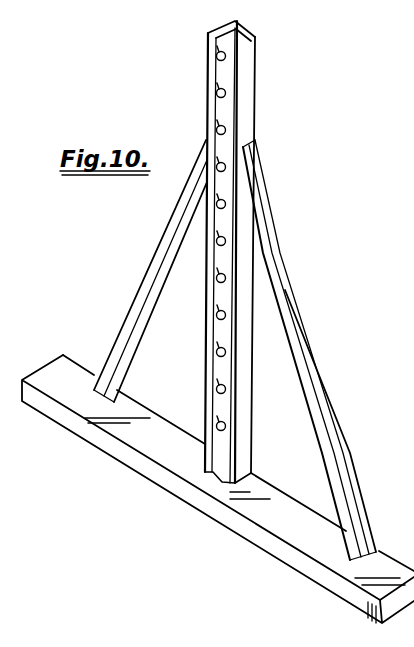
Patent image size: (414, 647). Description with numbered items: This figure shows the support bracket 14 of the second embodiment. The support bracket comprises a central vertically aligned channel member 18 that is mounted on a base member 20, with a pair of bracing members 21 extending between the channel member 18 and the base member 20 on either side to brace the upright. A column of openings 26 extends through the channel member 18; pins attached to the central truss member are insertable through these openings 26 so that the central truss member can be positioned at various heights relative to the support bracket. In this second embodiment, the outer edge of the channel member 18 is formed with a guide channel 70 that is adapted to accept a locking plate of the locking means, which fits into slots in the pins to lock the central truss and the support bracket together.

The support rack assembly 14 is at (280, 158).
The channel member 18 is at (250, 107).
The base member 20 is at (286, 502).
The bracing members 21 is at (150, 291).
The openings 26 is at (212, 268).
The guide channel 70 is at (220, 47).